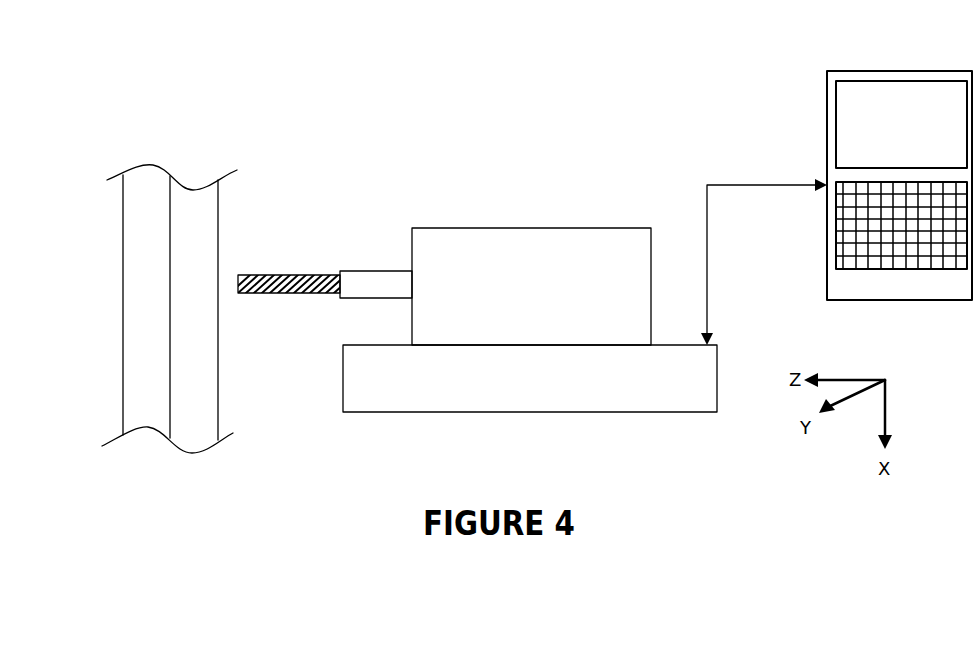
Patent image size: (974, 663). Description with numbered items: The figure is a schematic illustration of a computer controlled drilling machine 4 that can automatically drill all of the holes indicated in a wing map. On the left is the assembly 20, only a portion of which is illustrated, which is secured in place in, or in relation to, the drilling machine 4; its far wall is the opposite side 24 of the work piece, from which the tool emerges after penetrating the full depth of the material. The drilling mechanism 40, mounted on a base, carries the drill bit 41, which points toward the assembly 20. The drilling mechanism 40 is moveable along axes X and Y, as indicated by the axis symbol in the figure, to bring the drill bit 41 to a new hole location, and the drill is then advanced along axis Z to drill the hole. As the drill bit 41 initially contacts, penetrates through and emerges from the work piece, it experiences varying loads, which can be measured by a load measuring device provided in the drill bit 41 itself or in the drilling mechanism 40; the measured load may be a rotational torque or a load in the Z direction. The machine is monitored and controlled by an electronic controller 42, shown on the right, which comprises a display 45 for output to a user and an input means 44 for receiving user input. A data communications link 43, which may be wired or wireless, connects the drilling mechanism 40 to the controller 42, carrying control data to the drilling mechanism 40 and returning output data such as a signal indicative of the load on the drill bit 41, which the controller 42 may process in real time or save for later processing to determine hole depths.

The drilling machine 4 is at (450, 130).
The assembly 20 is at (192, 146).
The opposite side 24 is at (125, 248).
The drilling mechanism 40 is at (463, 265).
The drill bit 41 is at (253, 275).
The electronic controller 42 is at (814, 91).
The data communications link 43 is at (742, 184).
The input means 44 is at (898, 238).
The display 45 is at (882, 145).